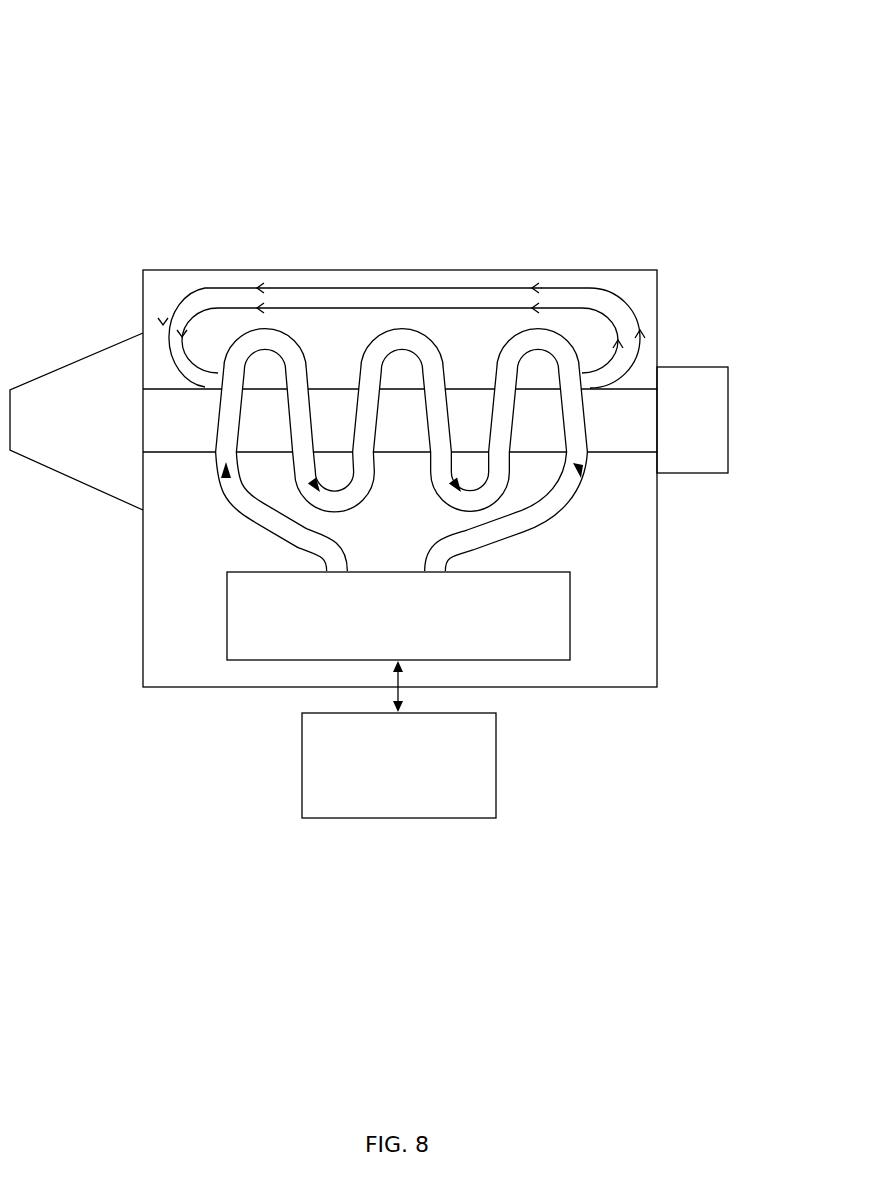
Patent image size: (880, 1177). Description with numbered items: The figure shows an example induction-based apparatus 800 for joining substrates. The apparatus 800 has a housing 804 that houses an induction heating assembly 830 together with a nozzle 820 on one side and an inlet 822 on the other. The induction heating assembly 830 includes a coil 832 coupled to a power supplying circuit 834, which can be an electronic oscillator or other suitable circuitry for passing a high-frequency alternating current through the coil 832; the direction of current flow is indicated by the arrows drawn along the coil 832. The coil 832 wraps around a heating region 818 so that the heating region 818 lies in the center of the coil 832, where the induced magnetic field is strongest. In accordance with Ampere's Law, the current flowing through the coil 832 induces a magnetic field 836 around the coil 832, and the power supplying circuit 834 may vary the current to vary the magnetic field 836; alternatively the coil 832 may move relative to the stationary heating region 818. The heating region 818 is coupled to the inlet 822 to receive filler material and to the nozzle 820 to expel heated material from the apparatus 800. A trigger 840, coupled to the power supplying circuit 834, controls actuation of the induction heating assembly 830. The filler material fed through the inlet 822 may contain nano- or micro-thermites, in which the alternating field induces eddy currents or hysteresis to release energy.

The induction-based apparatus 800 is at (100, 98).
The housing 804 is at (197, 270).
The heating region 818 is at (618, 438).
The nozzle 820 is at (55, 416).
The inlet 822 is at (672, 416).
The induction heating assembly 830 is at (175, 628).
The coil 832 is at (242, 510).
The power supplying circuit 834 is at (378, 613).
The magnetic field 836 is at (340, 258).
The trigger 840 is at (379, 763).